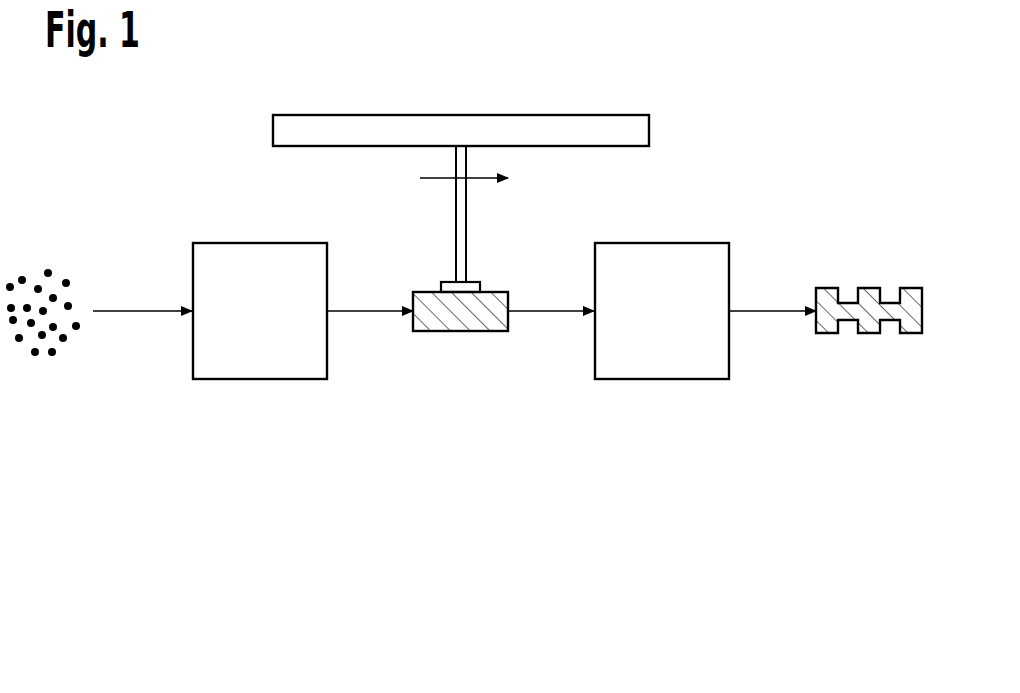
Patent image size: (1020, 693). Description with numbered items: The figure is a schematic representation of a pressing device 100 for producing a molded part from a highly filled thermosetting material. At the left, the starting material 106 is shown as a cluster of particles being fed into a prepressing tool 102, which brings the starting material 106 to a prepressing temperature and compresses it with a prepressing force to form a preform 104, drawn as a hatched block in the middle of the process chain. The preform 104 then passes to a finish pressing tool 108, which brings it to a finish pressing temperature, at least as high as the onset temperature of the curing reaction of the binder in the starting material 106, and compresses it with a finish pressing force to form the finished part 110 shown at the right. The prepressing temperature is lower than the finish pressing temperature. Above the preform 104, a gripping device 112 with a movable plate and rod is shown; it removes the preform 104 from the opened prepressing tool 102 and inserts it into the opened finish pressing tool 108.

The pressing device 100 is at (137, 148).
The prepressing tool 102 is at (259, 380).
The preform 104 is at (459, 333).
The starting material 106 is at (35, 357).
The finish pressing tool 108 is at (660, 380).
The finished part 110 is at (868, 335).
The gripping device 112 is at (627, 98).